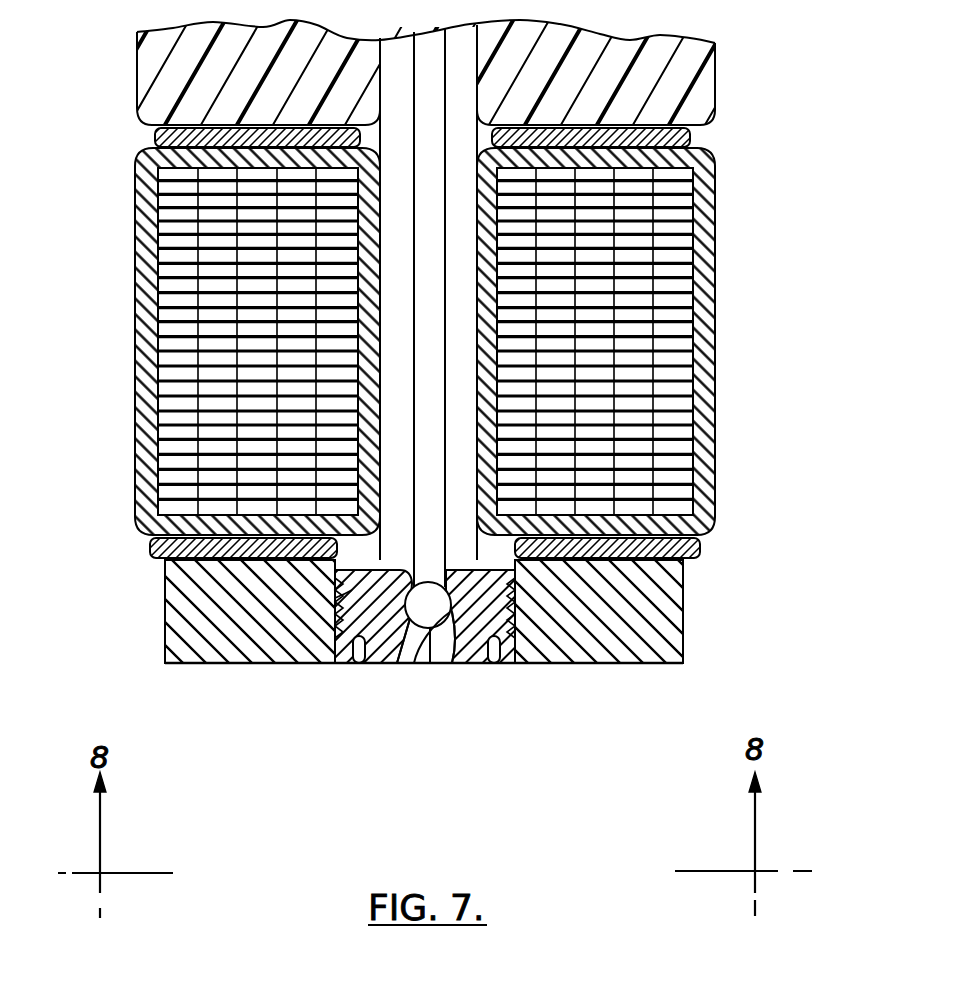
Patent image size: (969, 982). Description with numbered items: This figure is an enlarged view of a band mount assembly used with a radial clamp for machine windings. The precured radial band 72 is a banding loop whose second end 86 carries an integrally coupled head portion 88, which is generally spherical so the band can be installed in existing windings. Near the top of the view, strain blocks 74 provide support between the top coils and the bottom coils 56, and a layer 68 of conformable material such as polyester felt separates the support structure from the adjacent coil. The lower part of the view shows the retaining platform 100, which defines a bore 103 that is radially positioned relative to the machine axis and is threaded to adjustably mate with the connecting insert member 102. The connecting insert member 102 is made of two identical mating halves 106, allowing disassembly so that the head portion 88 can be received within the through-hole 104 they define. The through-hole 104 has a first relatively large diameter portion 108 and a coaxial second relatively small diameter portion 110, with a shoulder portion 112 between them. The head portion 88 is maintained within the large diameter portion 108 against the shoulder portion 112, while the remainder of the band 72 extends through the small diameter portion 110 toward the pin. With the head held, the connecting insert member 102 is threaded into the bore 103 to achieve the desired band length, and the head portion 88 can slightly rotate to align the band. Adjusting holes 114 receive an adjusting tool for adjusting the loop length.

The precured radial band 72 is at (435, 87).
The strain block 74 is at (715, 72).
The layer of conformable material 68 is at (155, 138).
The bottom coil 56 is at (183, 450).
The second end of the radial band 86 is at (430, 484).
The head portion 88 is at (500, 517).
The second relatively small diameter portion 110 is at (330, 598).
The retaining platform 100 is at (683, 625).
The mating halves 106 is at (240, 665).
The adjusting holes 114 is at (287, 663).
The shoulder portion 112 is at (405, 663).
The first relatively large diameter portion 108 is at (410, 665).
The through-hole 104 is at (452, 663).
The connecting insert member 102 is at (553, 663).
The bore 103 is at (617, 663).